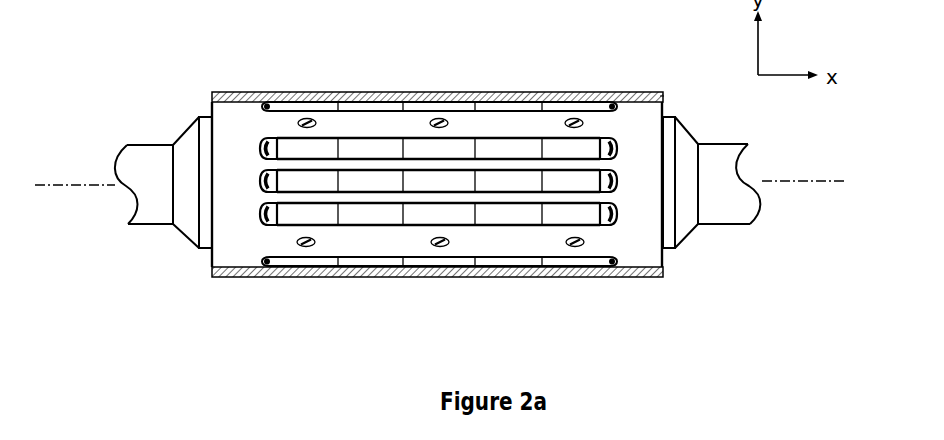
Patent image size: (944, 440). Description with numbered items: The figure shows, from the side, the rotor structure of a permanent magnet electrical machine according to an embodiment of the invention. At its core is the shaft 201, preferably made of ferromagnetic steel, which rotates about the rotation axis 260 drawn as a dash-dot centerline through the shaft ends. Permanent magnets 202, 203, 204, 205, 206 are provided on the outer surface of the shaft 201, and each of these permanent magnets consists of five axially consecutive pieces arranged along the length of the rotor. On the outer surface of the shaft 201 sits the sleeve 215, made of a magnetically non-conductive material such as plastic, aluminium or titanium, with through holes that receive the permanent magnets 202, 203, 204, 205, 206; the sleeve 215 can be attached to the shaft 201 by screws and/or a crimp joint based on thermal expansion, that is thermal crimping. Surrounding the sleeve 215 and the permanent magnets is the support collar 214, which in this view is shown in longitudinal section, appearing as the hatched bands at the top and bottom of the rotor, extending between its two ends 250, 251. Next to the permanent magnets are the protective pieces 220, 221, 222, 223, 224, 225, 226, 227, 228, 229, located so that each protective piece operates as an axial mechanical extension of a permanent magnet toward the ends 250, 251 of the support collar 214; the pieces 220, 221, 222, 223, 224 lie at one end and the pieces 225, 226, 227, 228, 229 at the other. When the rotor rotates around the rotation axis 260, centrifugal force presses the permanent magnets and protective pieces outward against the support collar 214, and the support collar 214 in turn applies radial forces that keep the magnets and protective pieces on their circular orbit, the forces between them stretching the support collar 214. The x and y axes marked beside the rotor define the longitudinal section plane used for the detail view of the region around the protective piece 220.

The shaft 201 is at (711, 174).
The permanent magnet 202 is at (439, 81).
The permanent magnet 203 is at (320, 148).
The permanent magnet 204 is at (317, 182).
The permanent magnet 205 is at (317, 213).
The permanent magnet 206 is at (300, 261).
The support collar 214 is at (437, 75).
The sleeve 215 is at (664, 254).
The protective piece 220 is at (265, 107).
The protective piece 221 is at (261, 149).
The protective piece 222 is at (261, 182).
The protective piece 223 is at (263, 214).
The protective piece 224 is at (280, 275).
The protective piece 225 is at (611, 103).
The protective piece 226 is at (620, 144).
The protective piece 227 is at (618, 184).
The protective piece 228 is at (618, 216).
The protective piece 229 is at (603, 276).
The end of the support collar 250 is at (211, 96).
The end of the support collar 251 is at (664, 97).
The rotation axis 260 is at (88, 187).